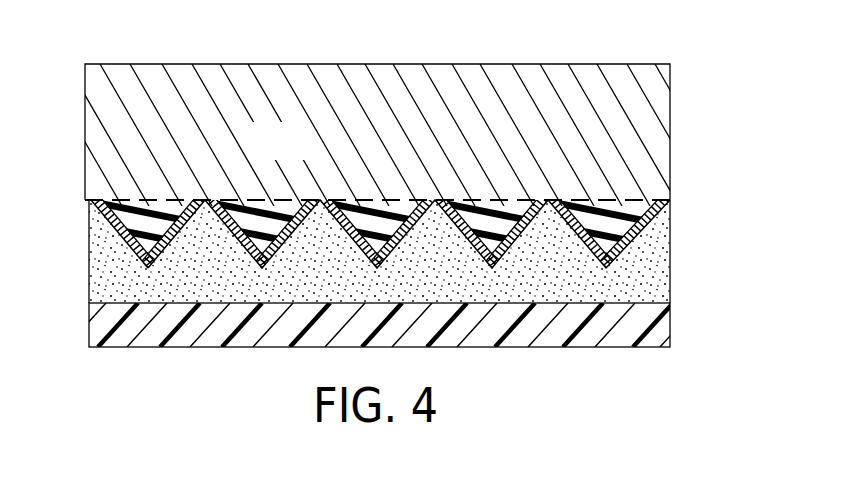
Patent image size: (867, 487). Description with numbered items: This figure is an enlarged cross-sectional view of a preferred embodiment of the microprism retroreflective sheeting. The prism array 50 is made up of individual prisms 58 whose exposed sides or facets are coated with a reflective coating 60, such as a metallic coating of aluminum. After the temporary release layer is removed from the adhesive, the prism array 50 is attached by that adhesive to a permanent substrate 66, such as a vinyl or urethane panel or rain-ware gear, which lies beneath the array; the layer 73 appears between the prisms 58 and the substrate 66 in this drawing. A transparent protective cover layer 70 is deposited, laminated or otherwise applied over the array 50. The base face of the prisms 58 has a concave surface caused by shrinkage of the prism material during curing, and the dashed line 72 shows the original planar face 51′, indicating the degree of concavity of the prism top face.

The prism array 50 is at (274, 203).
The prism facet 51′ is at (141, 207).
The prisms 58 is at (622, 210).
The reflective coating 60 is at (112, 242).
The permanent substrate 66 is at (670, 322).
The transparent protective cover layer 70 is at (658, 110).
The dashed line 72 is at (497, 190).
The adhesive layer 73 is at (92, 270).